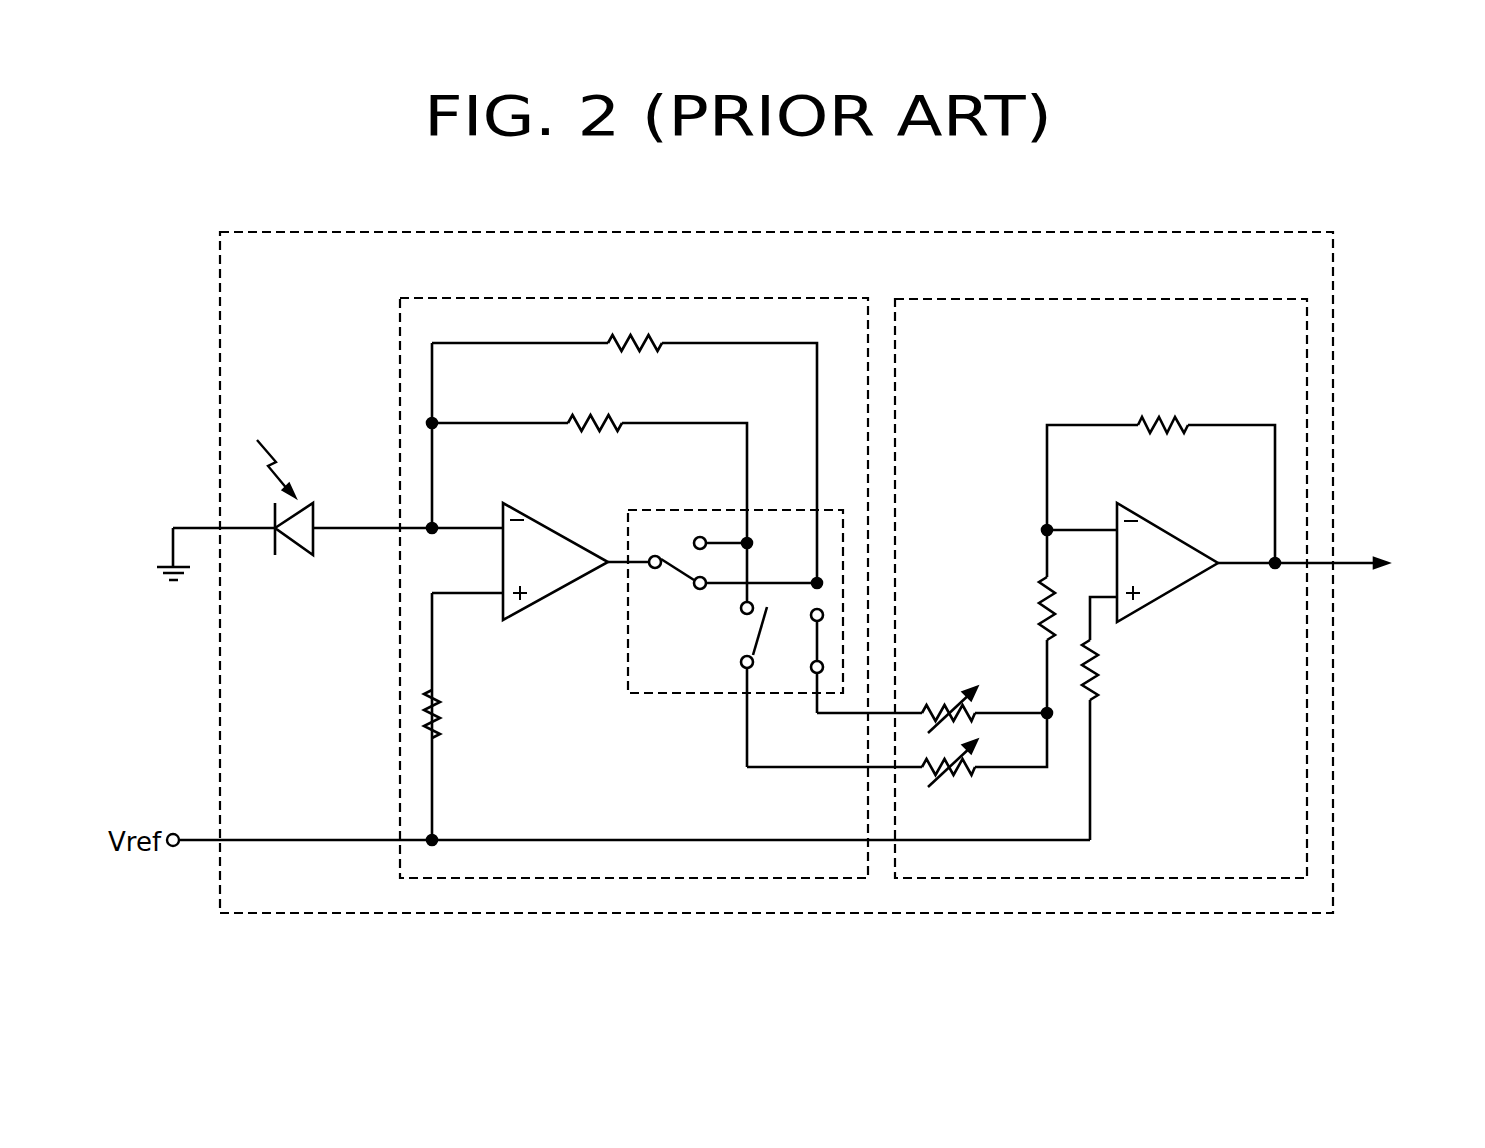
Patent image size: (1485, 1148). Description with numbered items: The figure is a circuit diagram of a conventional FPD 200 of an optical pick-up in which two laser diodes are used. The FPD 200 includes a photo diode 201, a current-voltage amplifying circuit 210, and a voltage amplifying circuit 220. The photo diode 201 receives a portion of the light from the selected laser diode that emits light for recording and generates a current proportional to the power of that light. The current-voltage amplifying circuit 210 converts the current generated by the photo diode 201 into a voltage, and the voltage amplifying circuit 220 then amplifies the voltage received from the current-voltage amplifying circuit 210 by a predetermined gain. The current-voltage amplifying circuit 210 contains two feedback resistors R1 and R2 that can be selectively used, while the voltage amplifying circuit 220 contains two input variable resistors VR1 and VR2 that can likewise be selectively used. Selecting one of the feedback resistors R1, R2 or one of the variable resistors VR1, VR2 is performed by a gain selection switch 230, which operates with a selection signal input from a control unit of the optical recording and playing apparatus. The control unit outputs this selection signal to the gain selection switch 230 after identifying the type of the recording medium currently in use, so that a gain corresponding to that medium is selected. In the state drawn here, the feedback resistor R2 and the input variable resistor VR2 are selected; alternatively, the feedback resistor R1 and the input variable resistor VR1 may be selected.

The FPD 200 is at (772, 232).
The current-voltage amplifying circuit 210 is at (632, 299).
The voltage amplifying circuit 220 is at (1103, 299).
The gain selection switch 230 is at (668, 693).
The photo diode 201 is at (295, 557).
The feedback resistor R1 is at (589, 508).
The feedback resistor R2 is at (624, 459).
The input variable resistor VR1 is at (897, 768).
The input variable resistor VR2 is at (932, 695).